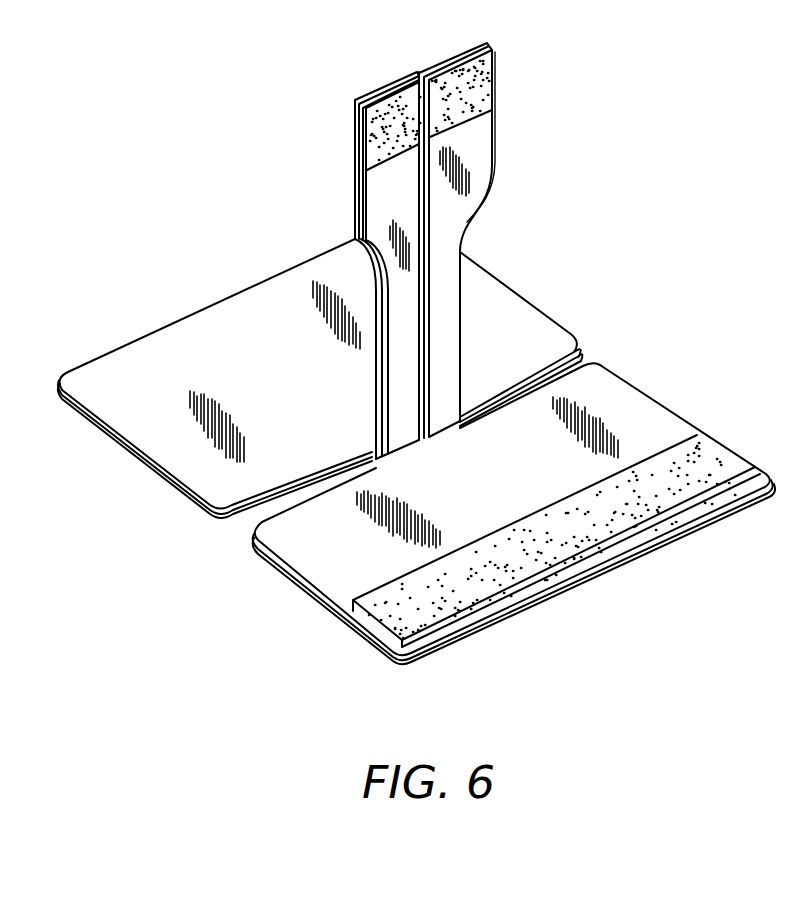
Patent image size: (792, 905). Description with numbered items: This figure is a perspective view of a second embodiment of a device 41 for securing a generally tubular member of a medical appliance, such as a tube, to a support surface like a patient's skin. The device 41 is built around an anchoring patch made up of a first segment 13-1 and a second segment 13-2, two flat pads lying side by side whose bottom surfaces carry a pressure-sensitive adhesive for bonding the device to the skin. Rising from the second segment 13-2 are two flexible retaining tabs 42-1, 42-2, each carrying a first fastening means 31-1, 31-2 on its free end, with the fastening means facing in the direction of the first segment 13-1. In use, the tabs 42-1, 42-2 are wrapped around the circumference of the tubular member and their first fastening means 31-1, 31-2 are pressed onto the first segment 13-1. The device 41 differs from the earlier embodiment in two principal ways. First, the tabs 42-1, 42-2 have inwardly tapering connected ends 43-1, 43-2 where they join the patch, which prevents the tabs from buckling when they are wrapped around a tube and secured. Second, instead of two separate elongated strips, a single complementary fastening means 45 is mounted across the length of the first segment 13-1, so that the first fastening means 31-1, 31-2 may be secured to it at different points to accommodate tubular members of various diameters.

The device 41 is at (700, 158).
The first segment 13-1 is at (672, 403).
The second segment 13-2 is at (527, 294).
The first fastening means 31-1 is at (385, 117).
The first fastening means 31-2 is at (467, 88).
The flexible retaining tab 42-1 is at (365, 202).
The flexible retaining tab 42-2 is at (487, 183).
The inwardly tapering connected end 43-1 is at (393, 397).
The inwardly tapering connected end 43-2 is at (443, 361).
The complementary fastening means 45 is at (553, 521).